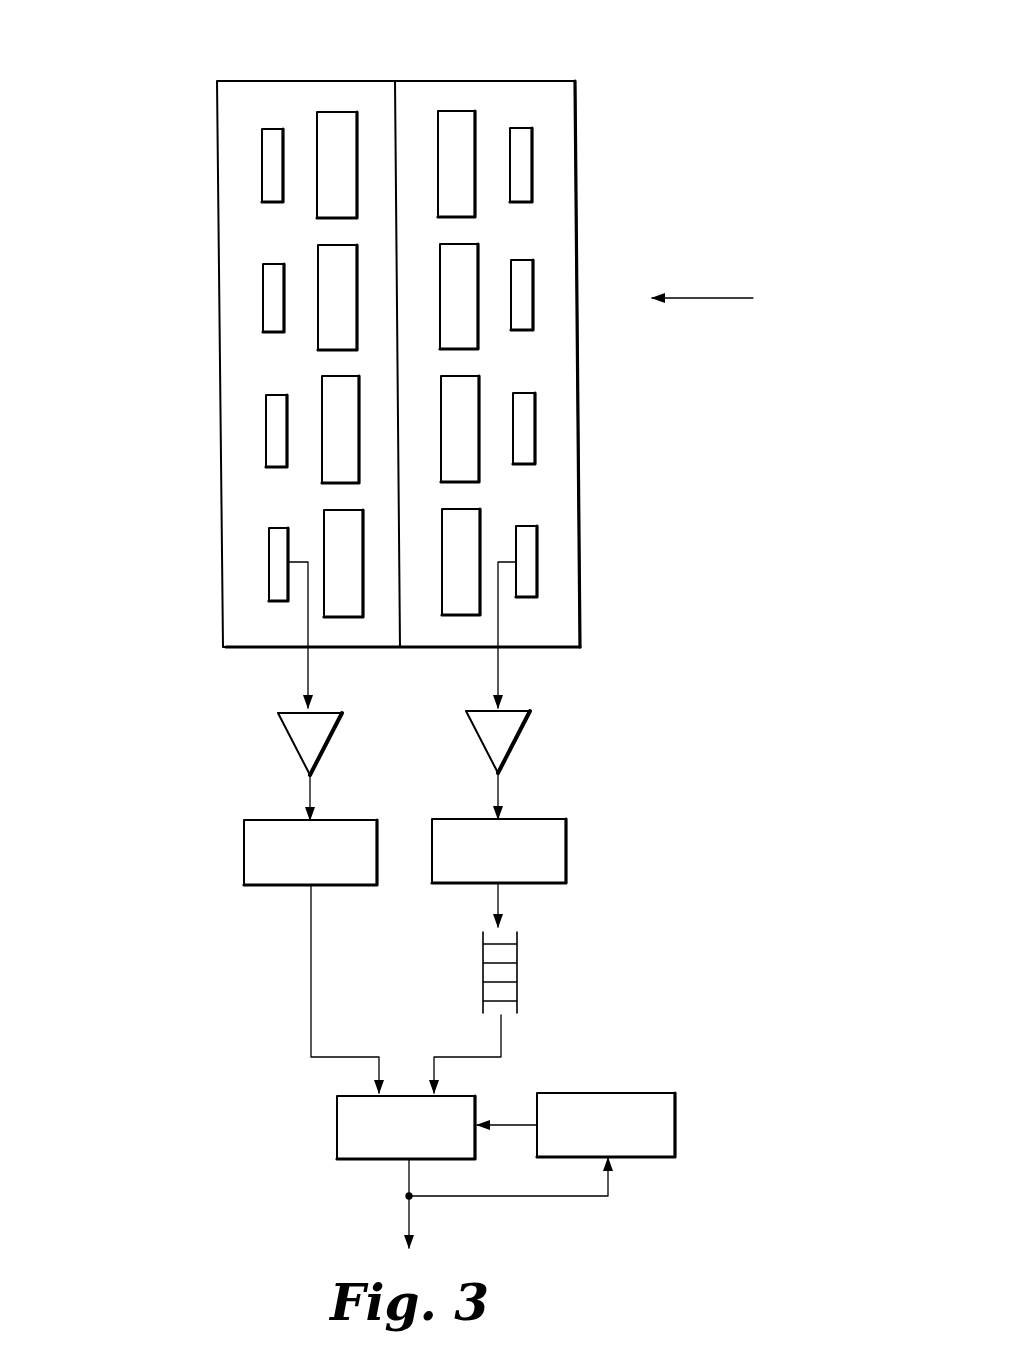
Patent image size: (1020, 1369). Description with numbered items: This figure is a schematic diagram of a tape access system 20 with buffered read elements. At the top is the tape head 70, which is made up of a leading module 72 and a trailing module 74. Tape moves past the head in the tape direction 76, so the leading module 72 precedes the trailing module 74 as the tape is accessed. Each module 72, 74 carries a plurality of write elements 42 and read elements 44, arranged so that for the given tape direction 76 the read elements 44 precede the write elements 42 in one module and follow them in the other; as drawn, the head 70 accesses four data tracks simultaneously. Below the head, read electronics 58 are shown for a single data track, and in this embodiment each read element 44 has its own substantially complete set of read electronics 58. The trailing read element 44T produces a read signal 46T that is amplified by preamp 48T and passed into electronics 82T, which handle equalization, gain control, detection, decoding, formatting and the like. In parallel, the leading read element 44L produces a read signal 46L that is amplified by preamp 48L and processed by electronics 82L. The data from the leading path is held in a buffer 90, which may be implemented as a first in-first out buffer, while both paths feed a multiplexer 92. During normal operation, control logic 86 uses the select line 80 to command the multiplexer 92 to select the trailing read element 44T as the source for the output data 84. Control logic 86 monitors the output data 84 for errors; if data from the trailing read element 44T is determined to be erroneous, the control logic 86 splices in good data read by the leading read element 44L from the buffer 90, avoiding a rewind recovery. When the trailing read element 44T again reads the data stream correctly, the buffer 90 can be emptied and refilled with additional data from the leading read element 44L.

The tape access system 20 is at (200, 1198).
The tape head 70 is at (168, 44).
The leading module 72 is at (517, 80).
The trailing module 74 is at (273, 80).
The write element 42 is at (328, 111).
The read element 44 is at (262, 183).
The trailing read element 44T is at (268, 581).
The leading read element 44L is at (537, 575).
The tape direction 76 is at (705, 298).
The read electronics 58 is at (165, 720).
The read signal from trailing read element 46T is at (308, 663).
The read signal from leading read element 46L is at (498, 663).
The preamp for trailing read element 48T is at (292, 750).
The preamp for leading read element 48L is at (515, 745).
The electronics for trailing read element 82T is at (243, 845).
The electronics for leading read element 82L is at (567, 843).
The buffer 90 is at (520, 954).
The multiplexer 92 is at (337, 1128).
The control logic 86 is at (650, 1093).
The select line 80 is at (513, 1125).
The output data 84 is at (409, 1220).